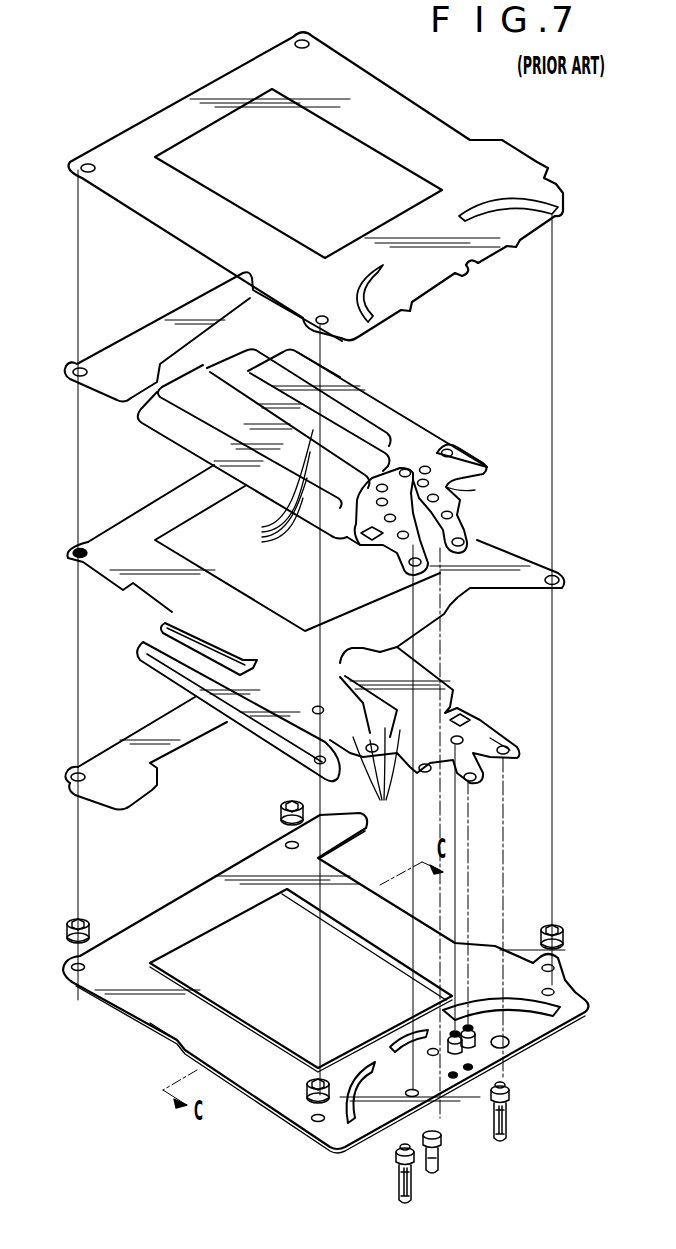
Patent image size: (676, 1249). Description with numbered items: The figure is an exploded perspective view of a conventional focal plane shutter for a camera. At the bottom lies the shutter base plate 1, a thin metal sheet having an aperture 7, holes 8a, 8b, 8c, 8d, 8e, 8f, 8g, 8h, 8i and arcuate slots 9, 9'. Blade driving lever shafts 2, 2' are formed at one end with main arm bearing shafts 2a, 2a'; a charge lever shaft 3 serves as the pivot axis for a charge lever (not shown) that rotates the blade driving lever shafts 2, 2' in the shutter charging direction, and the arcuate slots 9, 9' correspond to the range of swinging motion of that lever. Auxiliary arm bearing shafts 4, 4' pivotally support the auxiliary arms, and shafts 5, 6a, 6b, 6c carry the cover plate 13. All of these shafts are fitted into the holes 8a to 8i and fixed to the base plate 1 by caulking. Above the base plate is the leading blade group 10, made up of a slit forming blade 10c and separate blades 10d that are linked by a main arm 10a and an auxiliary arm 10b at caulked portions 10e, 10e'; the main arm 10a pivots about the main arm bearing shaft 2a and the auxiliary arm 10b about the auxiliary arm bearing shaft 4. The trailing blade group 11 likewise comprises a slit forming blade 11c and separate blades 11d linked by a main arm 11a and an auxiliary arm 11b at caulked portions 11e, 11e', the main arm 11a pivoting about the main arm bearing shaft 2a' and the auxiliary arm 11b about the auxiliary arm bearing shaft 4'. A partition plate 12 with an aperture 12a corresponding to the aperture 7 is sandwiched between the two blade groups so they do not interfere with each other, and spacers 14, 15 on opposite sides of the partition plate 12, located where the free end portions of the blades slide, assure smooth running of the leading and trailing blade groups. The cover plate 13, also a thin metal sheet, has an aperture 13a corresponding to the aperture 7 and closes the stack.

The shutter base plate 1 is at (252, 1065).
The blade driving lever shaft 2 is at (392, 1183).
The blade driving lever shaft 2' is at (519, 1126).
The main arm bearing shaft 2a is at (388, 1161).
The main arm bearing shaft 2a' is at (529, 1108).
The charge lever shaft 3 is at (438, 1170).
The auxiliary arm bearing shaft 4 is at (502, 1066).
The auxiliary arm bearing shaft 4' is at (516, 1053).
The shaft 5 is at (564, 938).
The shaft 6a is at (310, 1098).
The shaft 6b is at (66, 932).
The shaft 6c is at (280, 814).
The aperture 7 is at (340, 1050).
The hole 8a is at (405, 1085).
The hole 8b is at (512, 1040).
The hole 8c is at (395, 1035).
The hole 8d is at (440, 1060).
The hole 8e is at (466, 1085).
The hole 8f is at (556, 992).
The hole 8g is at (315, 1125).
The hole 8h is at (70, 982).
The hole 8i is at (282, 846).
The arcuate slot 9 is at (357, 1131).
The arcuate slot 9' is at (529, 1022).
The leading blade group 10 is at (417, 402).
The main arm 10a is at (378, 553).
The auxiliary arm 10b is at (460, 486).
The slit forming blade 10c is at (368, 406).
The separate blades 10d is at (270, 488).
The caulked portion 10e is at (382, 587).
The caulked portion 10e' is at (490, 526).
The trailing blade group 11 is at (420, 655).
The main arm 11a is at (488, 735).
The auxiliary arm 11b is at (450, 780).
The slit forming blade 11c is at (255, 722).
The separate blades 11d is at (392, 778).
The caulked portion 11e is at (444, 718).
The caulked portion 11e' is at (230, 706).
The partition plate 12 is at (536, 585).
The aperture 12a is at (184, 545).
The cover plate 13 is at (545, 178).
The aperture 13a is at (225, 118).
The spacer 14 is at (132, 350).
The spacer 15 is at (118, 760).